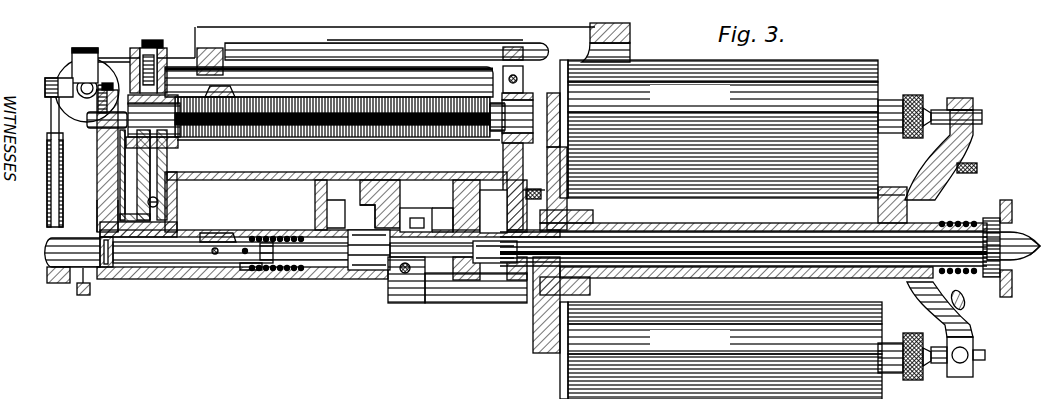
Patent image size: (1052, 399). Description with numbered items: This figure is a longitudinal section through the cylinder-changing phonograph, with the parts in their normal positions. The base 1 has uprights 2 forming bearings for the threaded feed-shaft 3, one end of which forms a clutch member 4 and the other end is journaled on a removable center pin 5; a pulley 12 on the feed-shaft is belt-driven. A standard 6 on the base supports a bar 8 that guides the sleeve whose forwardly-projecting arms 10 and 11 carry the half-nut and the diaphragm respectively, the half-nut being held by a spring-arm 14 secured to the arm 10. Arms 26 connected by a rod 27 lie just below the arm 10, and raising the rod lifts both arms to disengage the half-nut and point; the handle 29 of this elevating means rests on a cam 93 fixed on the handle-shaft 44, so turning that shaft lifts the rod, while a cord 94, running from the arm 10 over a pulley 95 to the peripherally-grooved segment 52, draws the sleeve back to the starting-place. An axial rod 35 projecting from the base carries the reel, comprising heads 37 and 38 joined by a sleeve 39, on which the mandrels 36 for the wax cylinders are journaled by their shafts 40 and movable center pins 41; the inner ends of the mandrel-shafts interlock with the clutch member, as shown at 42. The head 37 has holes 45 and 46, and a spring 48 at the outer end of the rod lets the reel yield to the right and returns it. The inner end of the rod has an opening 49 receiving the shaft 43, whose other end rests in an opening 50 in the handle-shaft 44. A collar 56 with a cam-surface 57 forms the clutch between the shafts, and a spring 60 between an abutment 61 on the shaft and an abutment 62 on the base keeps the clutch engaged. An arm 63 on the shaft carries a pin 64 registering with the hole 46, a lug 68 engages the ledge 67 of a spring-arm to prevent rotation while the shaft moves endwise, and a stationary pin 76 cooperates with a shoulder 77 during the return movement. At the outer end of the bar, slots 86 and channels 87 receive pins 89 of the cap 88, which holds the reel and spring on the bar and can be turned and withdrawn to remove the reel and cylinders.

The base 1 is at (265, 172).
The uprights 2 is at (97, 169).
The threaded feed-shaft 3 is at (312, 169).
The clutch member 4 is at (510, 125).
The removable center pin 5 is at (95, 124).
The standard 6 is at (152, 40).
The bar 8 is at (198, 52).
The arm 10 is at (360, 42).
The arm 11 is at (630, 33).
The pulley 12 is at (150, 159).
The spring-arm 14 is at (232, 92).
The arms 26 is at (500, 78).
The rod 27 is at (308, 97).
The operating lever or handle 29 is at (100, 197).
The axial rod or bar 35 is at (672, 272).
The mandrels 36 is at (720, 107).
The reel-head 37 is at (595, 214).
The reel-head 38 is at (912, 182).
The sleeve 39 is at (735, 224).
The mandrel-shaft 40 is at (893, 100).
The movable center pin 41 is at (982, 116).
The interlock 42 is at (540, 143).
The shaft 43 is at (340, 275).
The handle-shaft 44 is at (54, 250).
The holes 45 is at (545, 193).
The holes 46 is at (518, 212).
The spring 48 is at (956, 298).
The opening 49 is at (493, 303).
The opening 50 is at (112, 270).
The peripherally-grooved segment 52 is at (47, 153).
The collar 56 is at (200, 280).
The cam-surface 57 is at (234, 235).
The spring 60 is at (285, 280).
The abutment 61 is at (255, 280).
The abutment 62 is at (315, 214).
The arm 63 is at (400, 305).
The pin 64 is at (447, 303).
The ledge 67 is at (425, 212).
The lug 68 is at (433, 226).
The stationary pin 76 is at (372, 228).
The shoulder 77 is at (346, 232).
The slots 86 is at (1042, 244).
The channels 87 is at (985, 245).
The cap 88 is at (1012, 209).
The pins 89 is at (986, 218).
The cam 93 is at (80, 291).
The cord 94 is at (118, 56).
The pulley 95 is at (68, 70).